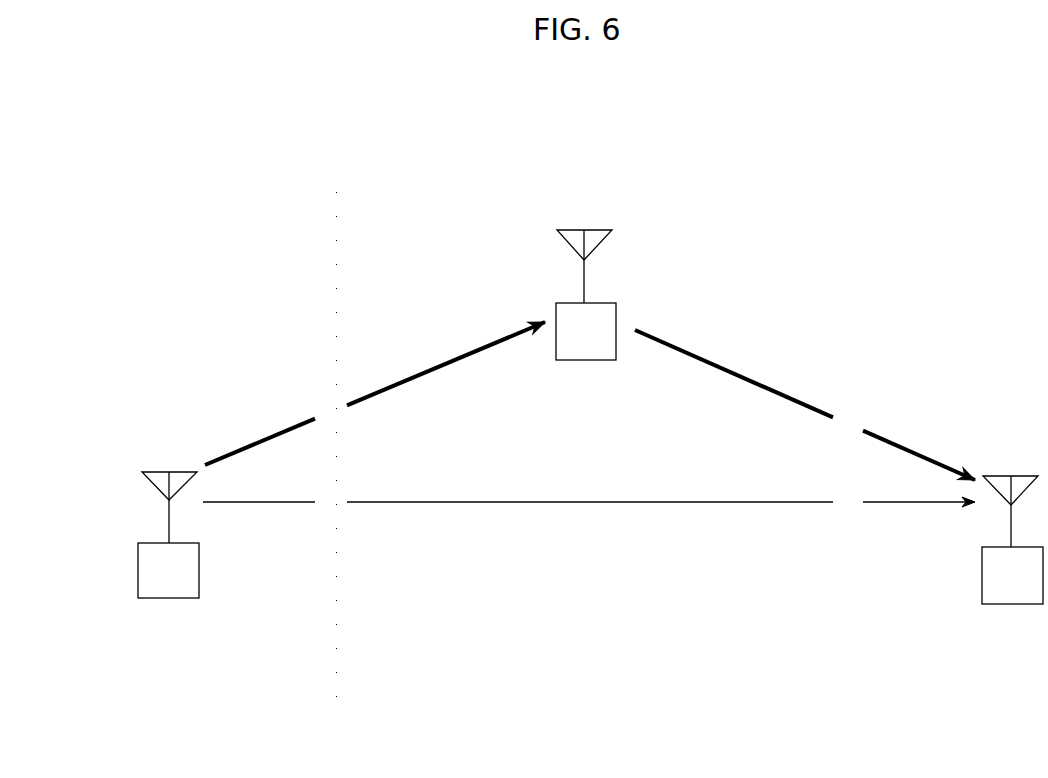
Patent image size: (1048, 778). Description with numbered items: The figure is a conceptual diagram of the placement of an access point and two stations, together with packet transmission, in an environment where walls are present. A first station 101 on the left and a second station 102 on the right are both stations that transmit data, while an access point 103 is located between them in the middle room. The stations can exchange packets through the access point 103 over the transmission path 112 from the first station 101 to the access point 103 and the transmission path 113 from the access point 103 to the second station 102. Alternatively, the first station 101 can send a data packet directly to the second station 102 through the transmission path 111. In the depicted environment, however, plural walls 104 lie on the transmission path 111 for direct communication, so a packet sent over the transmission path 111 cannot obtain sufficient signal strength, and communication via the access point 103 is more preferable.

The first station 101 is at (158, 598).
The second station 102 is at (1003, 604).
The access point 103 is at (618, 320).
The walls 104 is at (315, 620).
The transmission path 111 is at (800, 503).
The transmission path 112 is at (472, 345).
The transmission path 113 is at (697, 355).